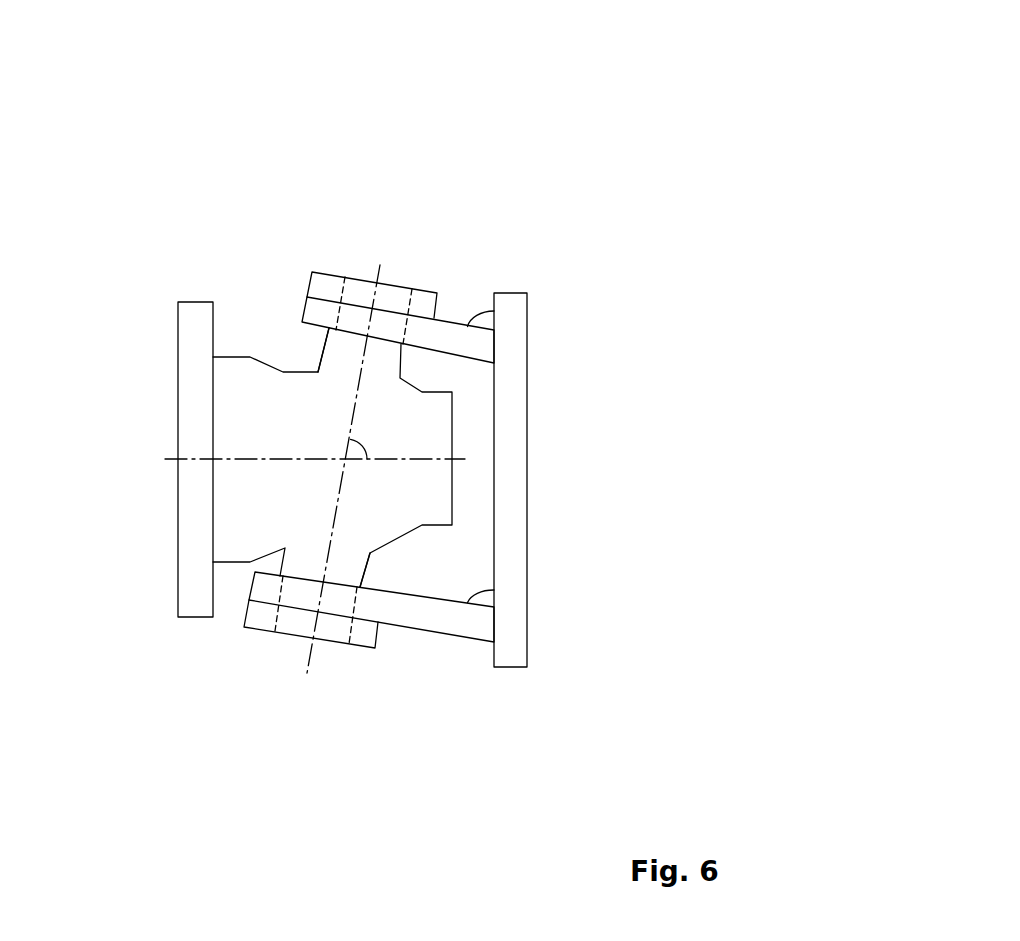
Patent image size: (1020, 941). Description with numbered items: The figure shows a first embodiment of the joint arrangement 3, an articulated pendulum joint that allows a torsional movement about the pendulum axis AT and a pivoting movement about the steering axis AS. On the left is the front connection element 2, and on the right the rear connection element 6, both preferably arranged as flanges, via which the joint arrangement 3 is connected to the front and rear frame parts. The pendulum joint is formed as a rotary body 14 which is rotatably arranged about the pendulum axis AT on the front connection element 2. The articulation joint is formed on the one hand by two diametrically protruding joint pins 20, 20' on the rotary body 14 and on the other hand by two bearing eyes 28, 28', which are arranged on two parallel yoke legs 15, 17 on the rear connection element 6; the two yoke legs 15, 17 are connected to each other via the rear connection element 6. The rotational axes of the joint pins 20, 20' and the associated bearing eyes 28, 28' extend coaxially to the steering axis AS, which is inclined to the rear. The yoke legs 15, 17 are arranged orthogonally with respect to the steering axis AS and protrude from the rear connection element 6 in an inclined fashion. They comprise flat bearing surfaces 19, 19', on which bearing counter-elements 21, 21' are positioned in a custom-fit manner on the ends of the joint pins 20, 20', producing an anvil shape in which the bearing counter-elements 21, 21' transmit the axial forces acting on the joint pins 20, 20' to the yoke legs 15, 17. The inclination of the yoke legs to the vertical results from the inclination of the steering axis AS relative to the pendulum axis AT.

The joint arrangement 3 is at (620, 157).
The front connection element 2 is at (195, 380).
The rear connection element 6 is at (505, 438).
The rotary body 14 is at (242, 518).
The yoke leg 15 is at (458, 625).
The yoke leg 17 is at (444, 328).
The flat bearing surface 19 is at (305, 694).
The flat bearing surface 19' is at (425, 245).
The joint pin 20 is at (392, 622).
The joint pin 20' is at (247, 309).
The bearing counter-element 21 is at (371, 666).
The bearing counter-element 21' is at (374, 261).
The bearing eye 28 is at (277, 668).
The bearing eye 28' is at (350, 242).
The pendulum axis AT is at (165, 459).
The steering axis AS is at (383, 268).